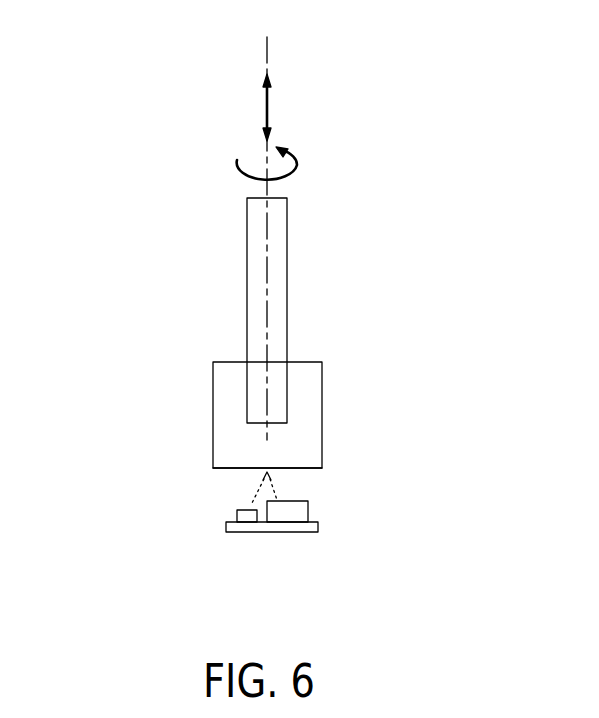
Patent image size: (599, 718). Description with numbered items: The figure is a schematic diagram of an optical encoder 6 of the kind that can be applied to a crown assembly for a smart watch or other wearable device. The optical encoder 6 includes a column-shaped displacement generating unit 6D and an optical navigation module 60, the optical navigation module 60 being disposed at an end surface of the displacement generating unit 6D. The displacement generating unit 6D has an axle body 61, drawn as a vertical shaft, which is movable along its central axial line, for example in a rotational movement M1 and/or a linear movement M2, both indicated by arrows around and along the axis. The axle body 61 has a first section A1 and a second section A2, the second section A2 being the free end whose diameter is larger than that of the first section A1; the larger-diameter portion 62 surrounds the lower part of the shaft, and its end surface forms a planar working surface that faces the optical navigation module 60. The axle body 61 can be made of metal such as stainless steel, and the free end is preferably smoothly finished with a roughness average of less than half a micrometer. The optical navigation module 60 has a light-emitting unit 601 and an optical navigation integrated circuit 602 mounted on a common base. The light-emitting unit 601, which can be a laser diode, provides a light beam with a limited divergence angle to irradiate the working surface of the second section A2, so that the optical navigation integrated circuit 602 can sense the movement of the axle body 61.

The optical encoder 6 is at (159, 46).
The displacement generating unit 6D is at (127, 298).
The axle body 61 is at (247, 311).
The housing / holder 62 is at (213, 416).
The optical navigation module 60 is at (272, 532).
The light-emitting unit 601 is at (240, 513).
The optical navigation integrated circuit 602 is at (309, 507).
The first section A1 is at (277, 423).
The second section A2 is at (232, 470).
The rotational movement M1 is at (297, 163).
The linear movement M2 is at (268, 107).